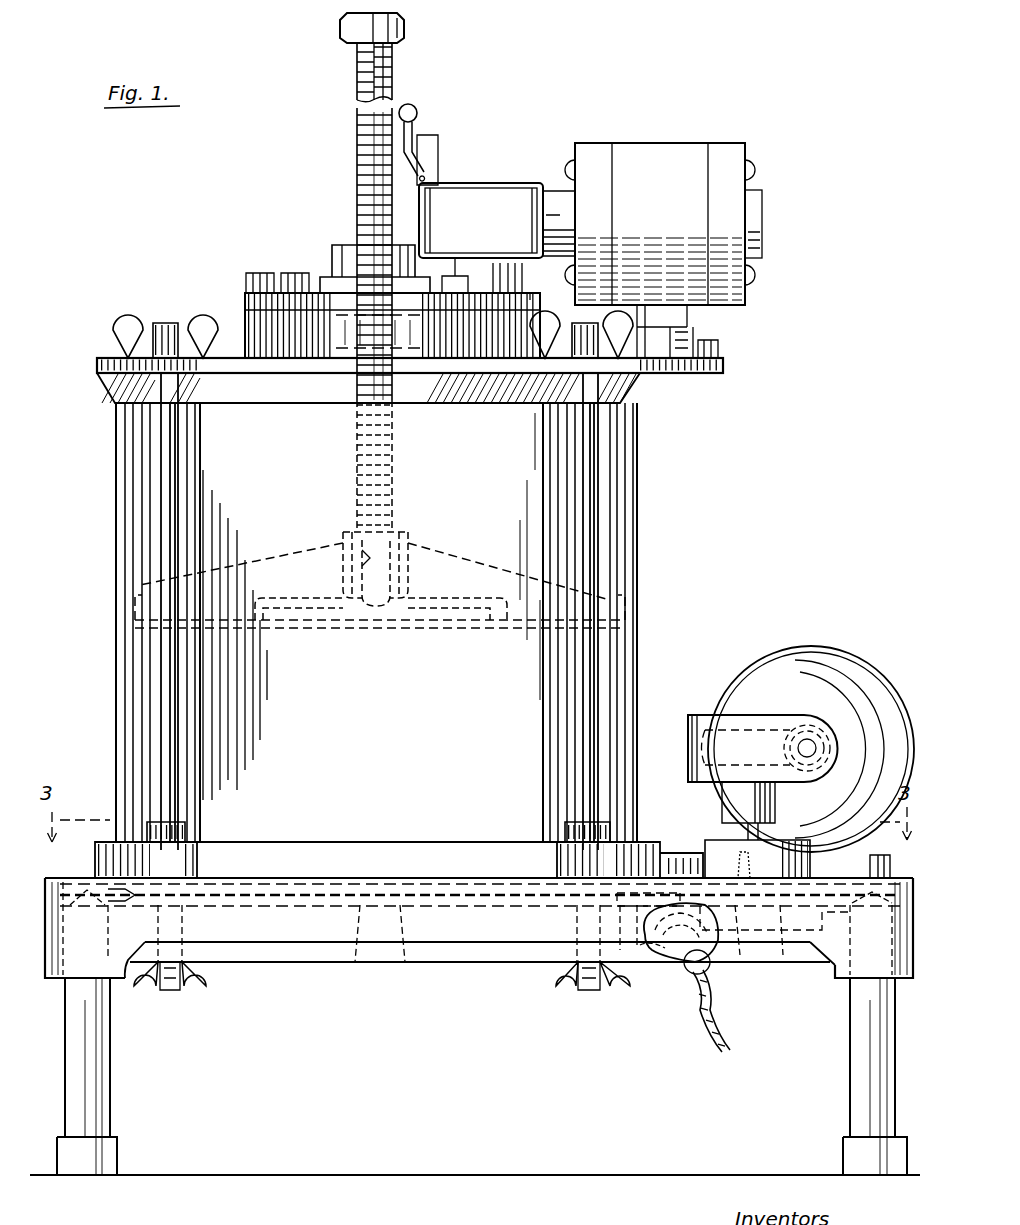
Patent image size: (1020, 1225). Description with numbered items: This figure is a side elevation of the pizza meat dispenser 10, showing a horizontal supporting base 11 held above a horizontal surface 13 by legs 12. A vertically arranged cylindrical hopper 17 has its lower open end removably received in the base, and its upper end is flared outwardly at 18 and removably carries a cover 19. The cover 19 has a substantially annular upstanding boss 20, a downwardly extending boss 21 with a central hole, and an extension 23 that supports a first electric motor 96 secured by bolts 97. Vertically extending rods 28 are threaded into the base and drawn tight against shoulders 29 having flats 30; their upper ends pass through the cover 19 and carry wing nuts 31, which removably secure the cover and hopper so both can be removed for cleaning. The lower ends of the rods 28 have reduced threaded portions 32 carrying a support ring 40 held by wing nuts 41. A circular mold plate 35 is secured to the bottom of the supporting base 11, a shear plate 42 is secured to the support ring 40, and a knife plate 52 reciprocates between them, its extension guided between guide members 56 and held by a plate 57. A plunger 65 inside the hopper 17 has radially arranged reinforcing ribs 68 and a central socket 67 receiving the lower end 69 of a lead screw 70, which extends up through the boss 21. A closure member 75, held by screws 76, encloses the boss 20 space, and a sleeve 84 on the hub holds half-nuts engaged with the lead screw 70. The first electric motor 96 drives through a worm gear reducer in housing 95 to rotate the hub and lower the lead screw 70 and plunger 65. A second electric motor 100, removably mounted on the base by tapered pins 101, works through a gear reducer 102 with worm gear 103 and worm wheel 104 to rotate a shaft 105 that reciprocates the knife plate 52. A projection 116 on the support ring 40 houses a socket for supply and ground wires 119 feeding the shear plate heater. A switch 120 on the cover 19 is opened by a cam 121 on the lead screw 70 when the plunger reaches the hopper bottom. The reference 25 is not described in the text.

The pizza meat dispenser 10 is at (733, 118).
The horizontal supporting base 11 is at (258, 965).
The legs 12 is at (96, 1080).
The horizontal surface 13 is at (432, 1175).
The cylindrical hopper 17 is at (630, 514).
The flared upper end 18 is at (628, 390).
The cover 19 is at (99, 360).
The annular upstanding boss 20 is at (245, 322).
The downwardly extending boss 21 is at (323, 384).
The extension 23 is at (688, 374).
The bolt block 25 is at (180, 855).
The vertically extending rods 28 is at (600, 468).
The shoulders 29 is at (185, 826).
The flats 30 is at (147, 830).
The wing nuts 31 is at (118, 320).
The reduced threaded portions 32 is at (156, 933).
The circular mold plate 35 is at (256, 882).
The support ring 40 is at (313, 962).
The wing nuts 41 is at (202, 996).
The shear plate 42 is at (407, 964).
The knife plate 52 is at (356, 964).
The guide members 56 is at (742, 958).
The plate 57 is at (785, 958).
The plunger 65 is at (510, 628).
The central socket 67 is at (343, 560).
The reinforcing ribs 68 is at (490, 565).
The lower end of lead screw 69 is at (408, 548).
The lead screw 70 is at (393, 74).
The closure member 75 is at (245, 298).
The screws 76 is at (290, 273).
The sleeve 84 is at (340, 245).
The housing 95 is at (503, 190).
The first electric motor 96 is at (640, 150).
The bolts 97 is at (720, 349).
The second electric motor 100 is at (830, 660).
The tapered pins 101 is at (740, 852).
The gear reducer 102 is at (692, 712).
The worm gear 103 is at (808, 726).
The worm wheel 104 is at (700, 745).
The shaft 105 is at (725, 825).
The projection 116 is at (650, 962).
The supply and ground wires 119 is at (720, 1020).
The switch 120 is at (434, 147).
The cam 121 is at (420, 26).